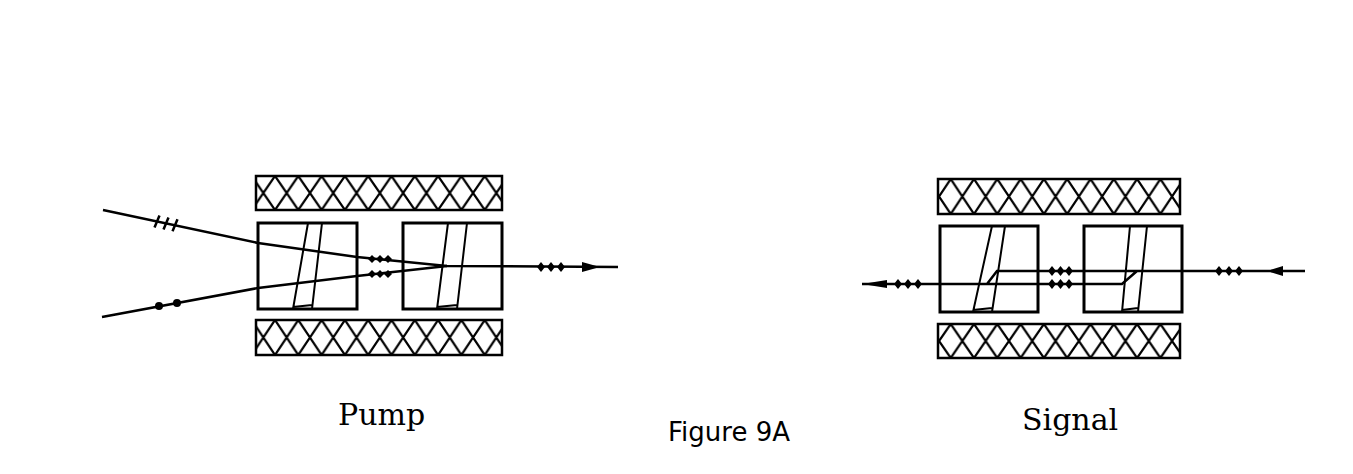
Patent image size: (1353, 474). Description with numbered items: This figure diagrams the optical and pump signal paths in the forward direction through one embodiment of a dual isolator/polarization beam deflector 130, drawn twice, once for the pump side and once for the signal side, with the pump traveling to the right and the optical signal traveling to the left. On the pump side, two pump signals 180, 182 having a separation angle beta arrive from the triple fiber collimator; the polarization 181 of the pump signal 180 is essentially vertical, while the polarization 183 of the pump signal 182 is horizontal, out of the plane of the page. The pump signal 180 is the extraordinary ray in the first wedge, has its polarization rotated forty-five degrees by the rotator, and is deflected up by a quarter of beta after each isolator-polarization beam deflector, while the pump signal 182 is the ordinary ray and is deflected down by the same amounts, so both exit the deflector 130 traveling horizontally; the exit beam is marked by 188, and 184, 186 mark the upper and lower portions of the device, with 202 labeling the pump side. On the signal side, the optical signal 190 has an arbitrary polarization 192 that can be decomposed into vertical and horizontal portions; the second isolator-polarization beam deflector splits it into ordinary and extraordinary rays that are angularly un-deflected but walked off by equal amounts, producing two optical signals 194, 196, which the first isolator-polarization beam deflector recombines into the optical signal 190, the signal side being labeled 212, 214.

The dual isolator/polarization beam deflector 130 is at (395, 97).
The pump signal 180 is at (130, 216).
The polarization of the pump signal 181 is at (178, 222).
The pump signal 182 is at (130, 308).
The polarization of the pump signal 183 is at (169, 302).
The first nonlinear crystal 184 is at (392, 260).
The second nonlinear crystal 186 is at (392, 260).
The combined pump output beam 188 is at (523, 265).
The optical signal 190 is at (887, 284).
The polarization of the optical signal 192 is at (1215, 271).
The optical signal 194 is at (1070, 271).
The optical signal 196 is at (1042, 284).
The pump beam path 202 is at (329, 468).
The signal beam path 212 is at (987, 468).
The signal beam path 214 is at (1162, 468).